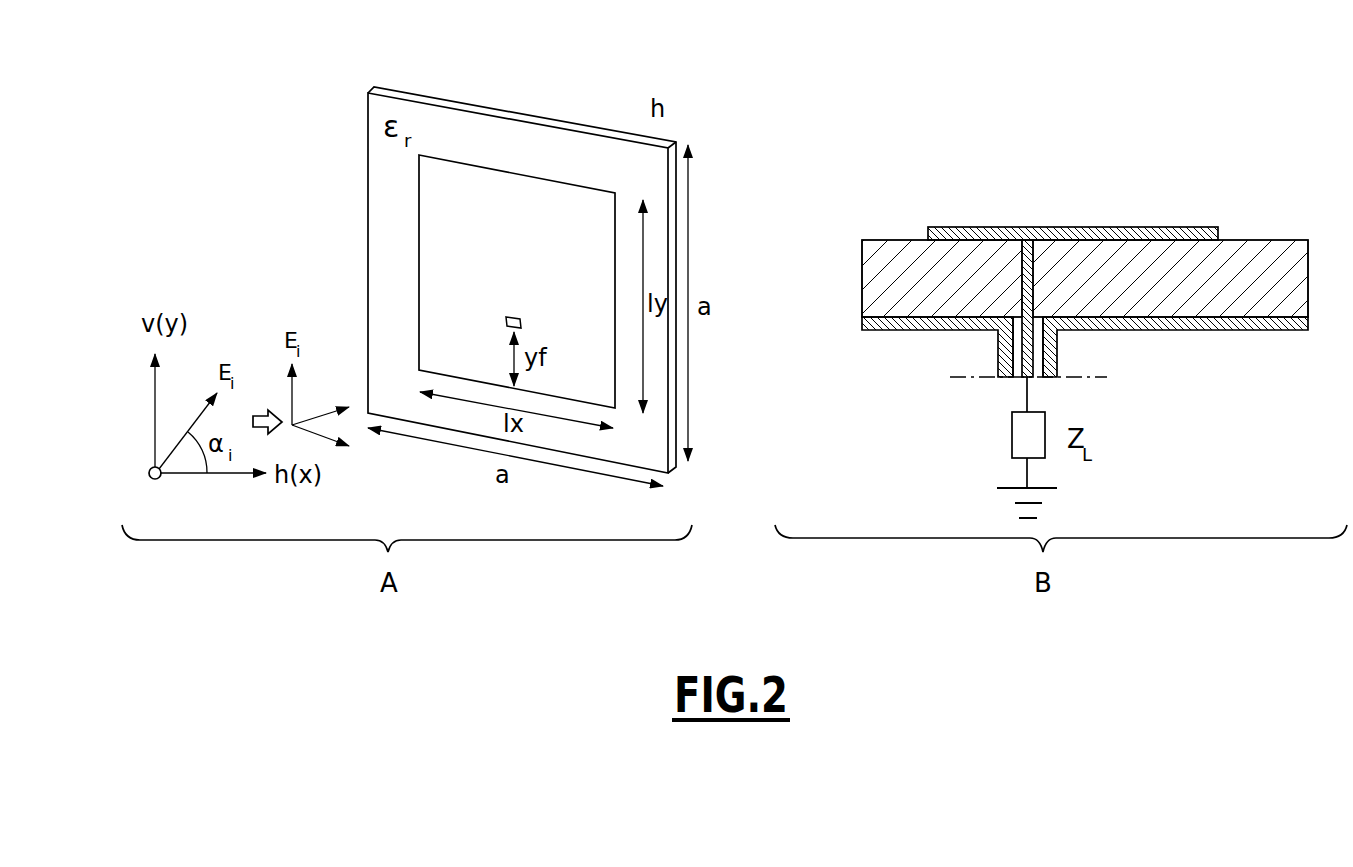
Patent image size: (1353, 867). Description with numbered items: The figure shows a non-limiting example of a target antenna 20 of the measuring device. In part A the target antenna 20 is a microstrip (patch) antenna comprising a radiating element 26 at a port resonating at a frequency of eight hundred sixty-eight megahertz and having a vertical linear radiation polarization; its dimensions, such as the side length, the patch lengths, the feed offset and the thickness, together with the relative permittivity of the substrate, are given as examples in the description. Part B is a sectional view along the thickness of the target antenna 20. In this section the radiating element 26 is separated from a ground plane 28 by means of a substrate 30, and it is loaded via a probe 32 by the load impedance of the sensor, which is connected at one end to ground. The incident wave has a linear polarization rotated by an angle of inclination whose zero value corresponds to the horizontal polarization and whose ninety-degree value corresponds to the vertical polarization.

The target antenna 20 is at (456, 108).
The radiating element 26 is at (447, 232).
The ground plane 28 is at (1272, 340).
The substrate 30 is at (1181, 293).
The probe 32 is at (1019, 281).